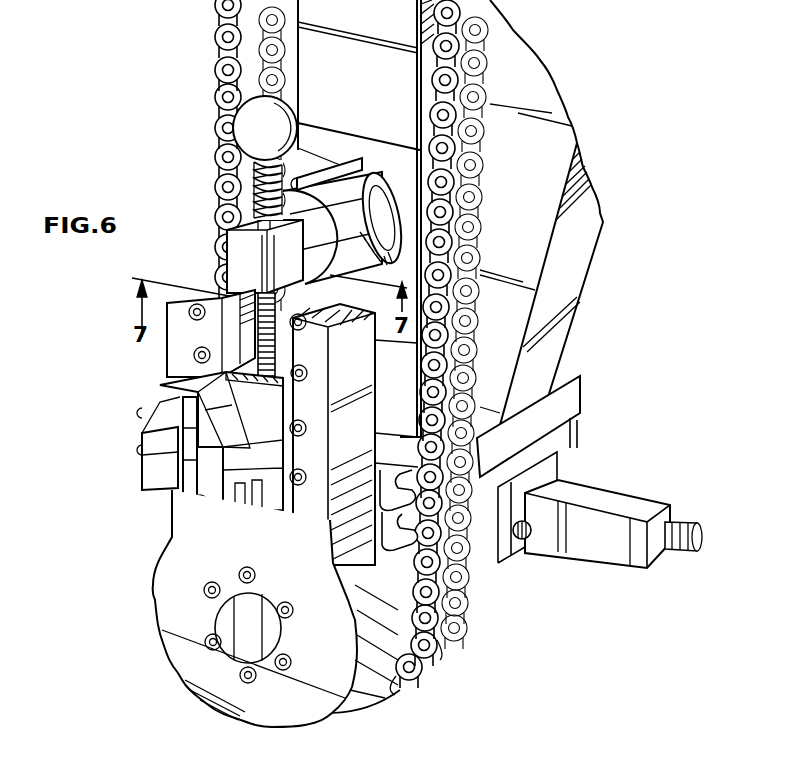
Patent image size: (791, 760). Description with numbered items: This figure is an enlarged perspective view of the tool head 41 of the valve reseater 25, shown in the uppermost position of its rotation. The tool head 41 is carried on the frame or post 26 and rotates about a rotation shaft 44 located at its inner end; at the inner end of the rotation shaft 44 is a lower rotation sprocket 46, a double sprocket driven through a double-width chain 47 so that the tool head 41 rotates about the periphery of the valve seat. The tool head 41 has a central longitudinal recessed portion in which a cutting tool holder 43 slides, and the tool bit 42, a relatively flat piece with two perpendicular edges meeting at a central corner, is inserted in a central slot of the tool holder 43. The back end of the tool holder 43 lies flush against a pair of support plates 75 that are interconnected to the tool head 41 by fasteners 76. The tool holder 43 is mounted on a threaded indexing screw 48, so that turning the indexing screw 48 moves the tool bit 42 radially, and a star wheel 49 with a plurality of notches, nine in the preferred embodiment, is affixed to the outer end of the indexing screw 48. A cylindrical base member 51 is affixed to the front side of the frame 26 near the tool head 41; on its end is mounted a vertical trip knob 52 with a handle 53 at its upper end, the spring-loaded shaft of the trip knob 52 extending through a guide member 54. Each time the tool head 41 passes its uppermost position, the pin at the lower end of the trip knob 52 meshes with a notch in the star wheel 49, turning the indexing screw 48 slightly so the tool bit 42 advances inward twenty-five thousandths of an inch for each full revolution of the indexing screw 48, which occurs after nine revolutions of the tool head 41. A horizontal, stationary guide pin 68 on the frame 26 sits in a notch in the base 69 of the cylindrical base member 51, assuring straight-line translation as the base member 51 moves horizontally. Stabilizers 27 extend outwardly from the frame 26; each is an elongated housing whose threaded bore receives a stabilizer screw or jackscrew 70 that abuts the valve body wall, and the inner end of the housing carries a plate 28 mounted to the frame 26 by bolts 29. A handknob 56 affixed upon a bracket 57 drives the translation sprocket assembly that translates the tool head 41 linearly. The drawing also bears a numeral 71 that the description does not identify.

The valve reseater 25 is at (163, 169).
The frame 26 is at (583, 247).
The stabilizers 27 is at (613, 498).
The plate 28 is at (558, 468).
The bolts 29 is at (527, 540).
The tool head 41 is at (160, 543).
The tool bit 42 is at (183, 393).
The cutting tool holder 43 is at (158, 467).
The rotation shaft 44 is at (229, 613).
The lower rotation sprocket 46 is at (381, 497).
The double-width chain 47 is at (218, 71).
The indexing screw 48 is at (274, 330).
The star wheel 49 is at (260, 293).
The cylindrical base member 51 is at (380, 197).
The trip knob 52 is at (250, 205).
The handle 53 is at (287, 123).
The guide member 54 is at (240, 248).
The handknob 56 is at (215, 320).
The bracket 57 is at (196, 356).
The guide pin 68 is at (334, 180).
The base 69 is at (360, 216).
The stabilizer screw 70 is at (690, 526).
The sprocket 71 is at (149, 7).
The support plates 75 is at (291, 516).
The fasteners 76 is at (303, 380).